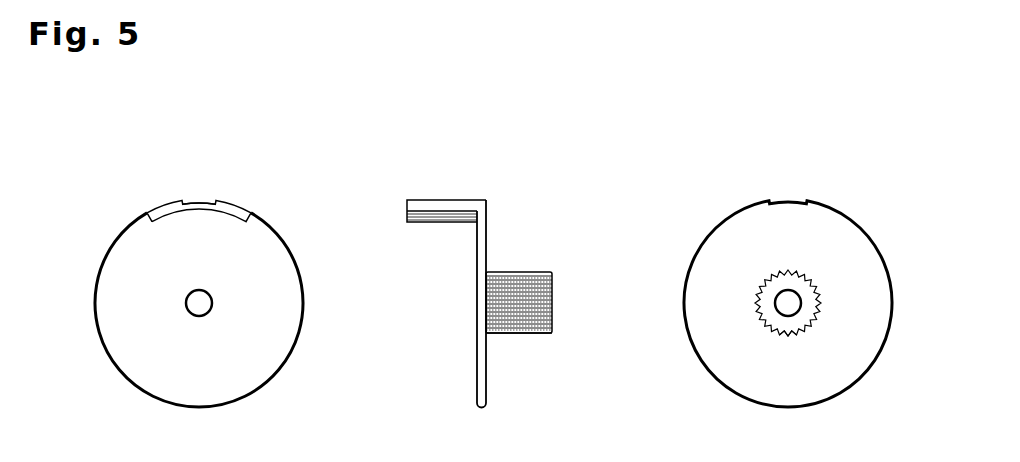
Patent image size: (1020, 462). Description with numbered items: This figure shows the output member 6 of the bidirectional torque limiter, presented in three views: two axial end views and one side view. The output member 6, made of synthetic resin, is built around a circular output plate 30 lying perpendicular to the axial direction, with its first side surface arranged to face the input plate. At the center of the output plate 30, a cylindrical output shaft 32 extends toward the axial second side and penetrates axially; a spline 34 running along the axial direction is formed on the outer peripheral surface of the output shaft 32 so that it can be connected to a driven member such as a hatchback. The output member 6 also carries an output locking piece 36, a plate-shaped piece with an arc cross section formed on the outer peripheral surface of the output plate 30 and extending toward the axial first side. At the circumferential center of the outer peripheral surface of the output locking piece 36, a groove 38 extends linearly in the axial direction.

The output member 6 is at (470, 106).
The output plate 30 is at (272, 382).
The output shaft 32 is at (532, 270).
The spline 34 is at (515, 335).
The output locking piece 36 is at (225, 223).
The groove 38 is at (199, 201).